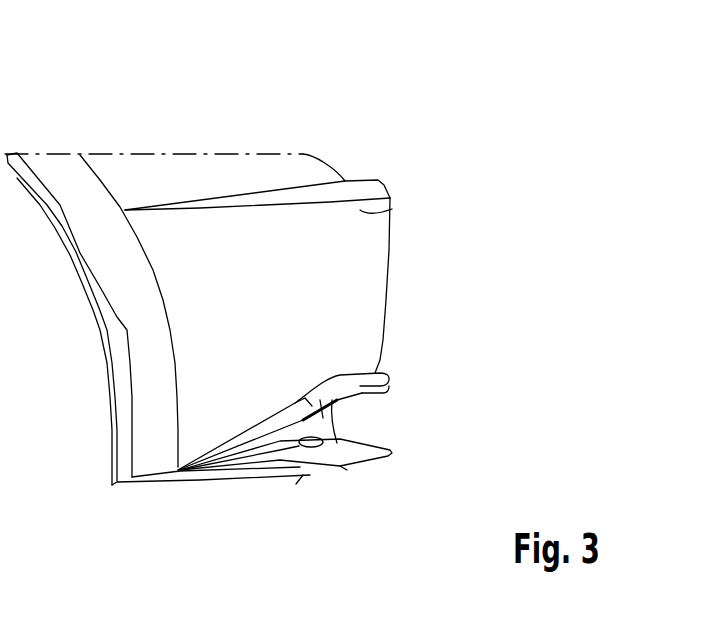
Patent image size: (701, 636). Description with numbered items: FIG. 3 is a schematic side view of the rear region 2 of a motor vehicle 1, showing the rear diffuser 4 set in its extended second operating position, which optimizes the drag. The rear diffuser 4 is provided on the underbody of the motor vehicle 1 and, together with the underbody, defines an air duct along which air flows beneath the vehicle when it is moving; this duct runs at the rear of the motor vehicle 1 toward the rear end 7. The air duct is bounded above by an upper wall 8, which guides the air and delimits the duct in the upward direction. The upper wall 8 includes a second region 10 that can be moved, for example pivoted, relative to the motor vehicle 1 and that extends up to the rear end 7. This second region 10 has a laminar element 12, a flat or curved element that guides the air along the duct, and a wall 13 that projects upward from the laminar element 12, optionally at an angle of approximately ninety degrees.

The motor vehicle 1 is at (344, 98).
The rear region 2 is at (392, 210).
The rear end 7 is at (393, 218).
The wall 13 is at (323, 425).
The rear diffuser 4 is at (362, 460).
The upper wall 8 is at (168, 478).
The second region 10 is at (313, 475).
The laminar element 12 is at (347, 470).